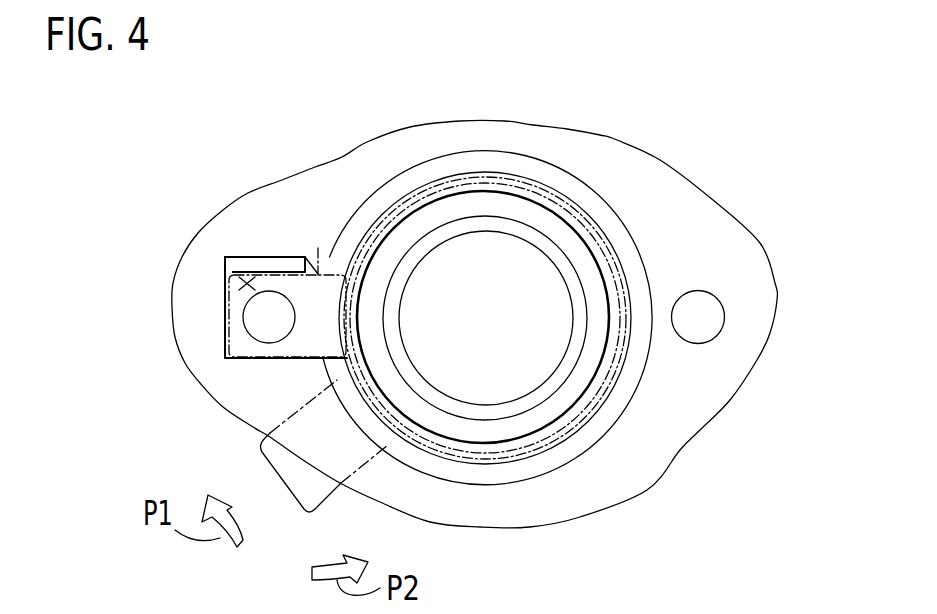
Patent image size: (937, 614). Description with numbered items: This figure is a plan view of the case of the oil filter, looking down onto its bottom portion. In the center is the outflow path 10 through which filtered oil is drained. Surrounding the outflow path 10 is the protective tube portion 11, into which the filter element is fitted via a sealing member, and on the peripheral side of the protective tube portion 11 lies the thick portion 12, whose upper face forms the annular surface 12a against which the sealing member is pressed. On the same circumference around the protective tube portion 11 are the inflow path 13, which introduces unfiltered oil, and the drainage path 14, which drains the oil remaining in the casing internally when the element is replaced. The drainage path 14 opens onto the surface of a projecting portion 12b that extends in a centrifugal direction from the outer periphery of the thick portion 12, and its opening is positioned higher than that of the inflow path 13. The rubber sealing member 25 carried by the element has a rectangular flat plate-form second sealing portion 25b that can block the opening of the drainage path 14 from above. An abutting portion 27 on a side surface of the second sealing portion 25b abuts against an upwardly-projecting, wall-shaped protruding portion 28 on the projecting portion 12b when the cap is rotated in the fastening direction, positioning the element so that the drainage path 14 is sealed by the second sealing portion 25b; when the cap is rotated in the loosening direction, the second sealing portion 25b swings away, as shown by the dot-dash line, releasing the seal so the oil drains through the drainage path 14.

The outflow path 10 is at (457, 235).
The protective tube portion 11 is at (550, 243).
The thick portion 12 is at (367, 203).
The annular surface 12a is at (423, 173).
The projecting portion 12b is at (226, 330).
The inflow path 13 is at (697, 343).
The drainage path 14 is at (247, 313).
The sealing member 25 is at (318, 274).
The second sealing portion 25b is at (262, 364).
The abutting portion 27 is at (238, 286).
The protruding portion 28 is at (247, 263).